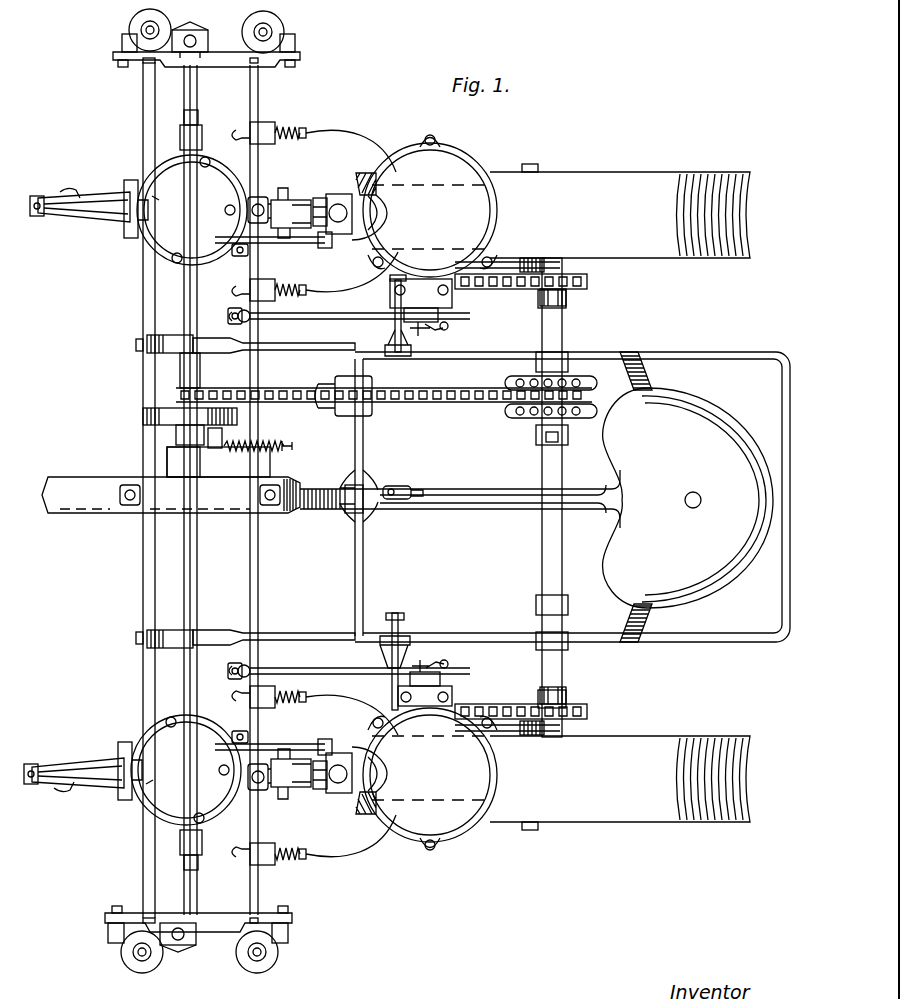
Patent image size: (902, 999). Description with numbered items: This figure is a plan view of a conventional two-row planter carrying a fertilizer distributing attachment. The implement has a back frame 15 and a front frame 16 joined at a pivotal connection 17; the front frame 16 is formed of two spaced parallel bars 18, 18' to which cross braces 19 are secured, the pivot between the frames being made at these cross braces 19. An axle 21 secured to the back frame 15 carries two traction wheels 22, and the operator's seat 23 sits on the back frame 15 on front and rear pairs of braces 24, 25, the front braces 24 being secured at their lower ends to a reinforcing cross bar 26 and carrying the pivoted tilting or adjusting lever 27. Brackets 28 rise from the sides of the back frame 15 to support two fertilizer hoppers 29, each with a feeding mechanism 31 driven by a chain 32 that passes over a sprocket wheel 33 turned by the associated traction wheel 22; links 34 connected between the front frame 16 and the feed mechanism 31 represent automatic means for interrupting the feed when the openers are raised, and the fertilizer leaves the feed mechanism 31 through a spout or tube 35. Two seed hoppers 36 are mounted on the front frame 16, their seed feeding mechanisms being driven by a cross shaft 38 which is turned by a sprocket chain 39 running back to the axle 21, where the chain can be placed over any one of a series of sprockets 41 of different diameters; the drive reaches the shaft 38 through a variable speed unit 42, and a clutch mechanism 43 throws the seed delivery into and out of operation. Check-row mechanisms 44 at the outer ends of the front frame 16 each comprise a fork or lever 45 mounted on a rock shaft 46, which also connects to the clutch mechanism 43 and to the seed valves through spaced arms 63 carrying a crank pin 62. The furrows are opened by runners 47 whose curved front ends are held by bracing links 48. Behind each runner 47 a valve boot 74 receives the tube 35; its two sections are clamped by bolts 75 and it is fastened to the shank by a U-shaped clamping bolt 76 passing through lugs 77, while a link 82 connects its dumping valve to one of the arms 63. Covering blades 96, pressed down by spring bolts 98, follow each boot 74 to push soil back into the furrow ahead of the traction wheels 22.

The back frame 15 is at (720, 352).
The front frame 16 is at (138, 578).
The pivotal connection 17 is at (190, 353).
The side bar 18 is at (123, 490).
The side bar 18' is at (275, 490).
The cross braces 19 is at (147, 347).
The axle 21 is at (542, 462).
The traction wheels 22 is at (662, 260).
The operator's seat 23 is at (725, 420).
The front braces 24 is at (515, 510).
The rear braces 25 is at (642, 372).
The cross bar 26 is at (363, 462).
The tilting or adjusting lever 27 is at (410, 487).
The brackets 28 is at (395, 298).
The fertilizer hoppers 29 is at (470, 193).
The feeding mechanism 31 is at (455, 305).
The chain 32 is at (478, 290).
The sprocket wheel 33 is at (568, 292).
The links 34 is at (340, 319).
The spout or tube 35 is at (338, 194).
The seed hoppers 36 is at (168, 240).
The cross shaft 38 is at (184, 524).
The sprocket chain 39 is at (478, 402).
The sprockets 41 is at (580, 402).
The variable speed unit 42 is at (162, 448).
The clutch mechanism 43 is at (140, 412).
The check-row mechanisms 44 is at (212, 44).
The fork or lever 45 is at (198, 36).
The rock shaft 46 is at (184, 100).
The runners 47 is at (90, 208).
The bracing links 48 is at (55, 204).
The crank pin 62 is at (234, 257).
The arms 63 is at (230, 320).
The valve boot 74 is at (344, 186).
The bolts 75 is at (318, 198).
The U-shaped clamping bolt 76 is at (258, 196).
The lugs 77 is at (276, 198).
The link 82 is at (318, 247).
The covering blades 96 is at (355, 136).
The spring bolts 98 is at (290, 130).